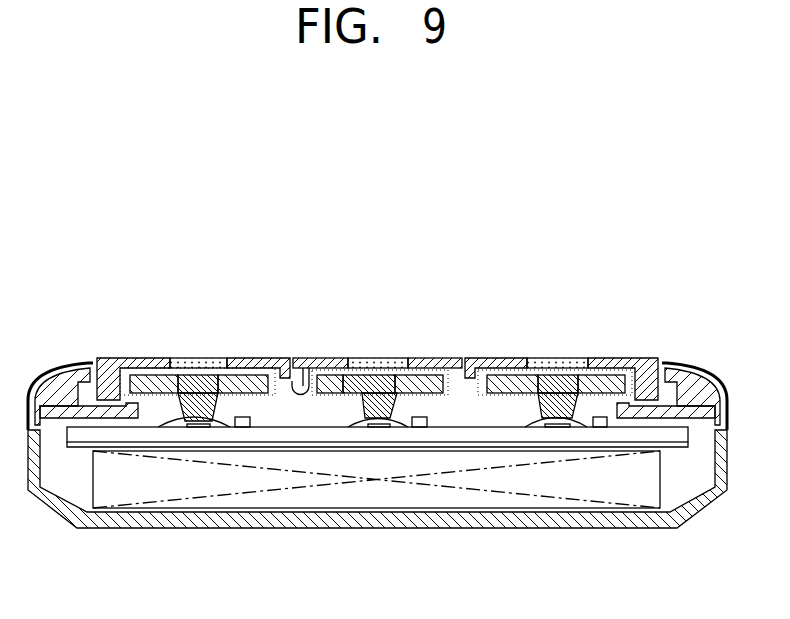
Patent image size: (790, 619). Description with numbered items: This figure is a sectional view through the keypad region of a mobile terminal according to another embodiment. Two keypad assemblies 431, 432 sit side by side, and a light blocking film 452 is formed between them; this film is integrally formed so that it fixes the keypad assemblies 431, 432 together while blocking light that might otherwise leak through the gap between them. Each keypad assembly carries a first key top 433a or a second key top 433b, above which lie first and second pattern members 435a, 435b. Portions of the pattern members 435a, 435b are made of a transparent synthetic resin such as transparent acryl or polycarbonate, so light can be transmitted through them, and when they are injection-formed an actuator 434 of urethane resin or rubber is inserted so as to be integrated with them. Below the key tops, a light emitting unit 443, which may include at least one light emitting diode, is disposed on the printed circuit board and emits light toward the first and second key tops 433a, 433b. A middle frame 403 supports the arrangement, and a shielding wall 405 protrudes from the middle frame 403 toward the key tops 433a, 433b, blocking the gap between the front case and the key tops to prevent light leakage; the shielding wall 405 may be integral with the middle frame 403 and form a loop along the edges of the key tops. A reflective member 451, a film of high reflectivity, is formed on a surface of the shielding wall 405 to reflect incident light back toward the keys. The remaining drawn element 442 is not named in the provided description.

The middle frame 403 is at (62, 388).
The shielding wall 405 is at (103, 413).
The keypad assembly 431 is at (158, 318).
The keypad assembly 432 is at (380, 339).
The first key top 433a is at (212, 355).
The second key top 433b is at (581, 354).
The actuator 434 is at (340, 395).
The first pattern member 435a is at (190, 361).
The second pattern member 435b is at (554, 361).
The image sensor 442 is at (180, 421).
The light emitting unit 443 is at (243, 427).
The reflective member 451 is at (140, 408).
The light blocking film 452 is at (305, 368).